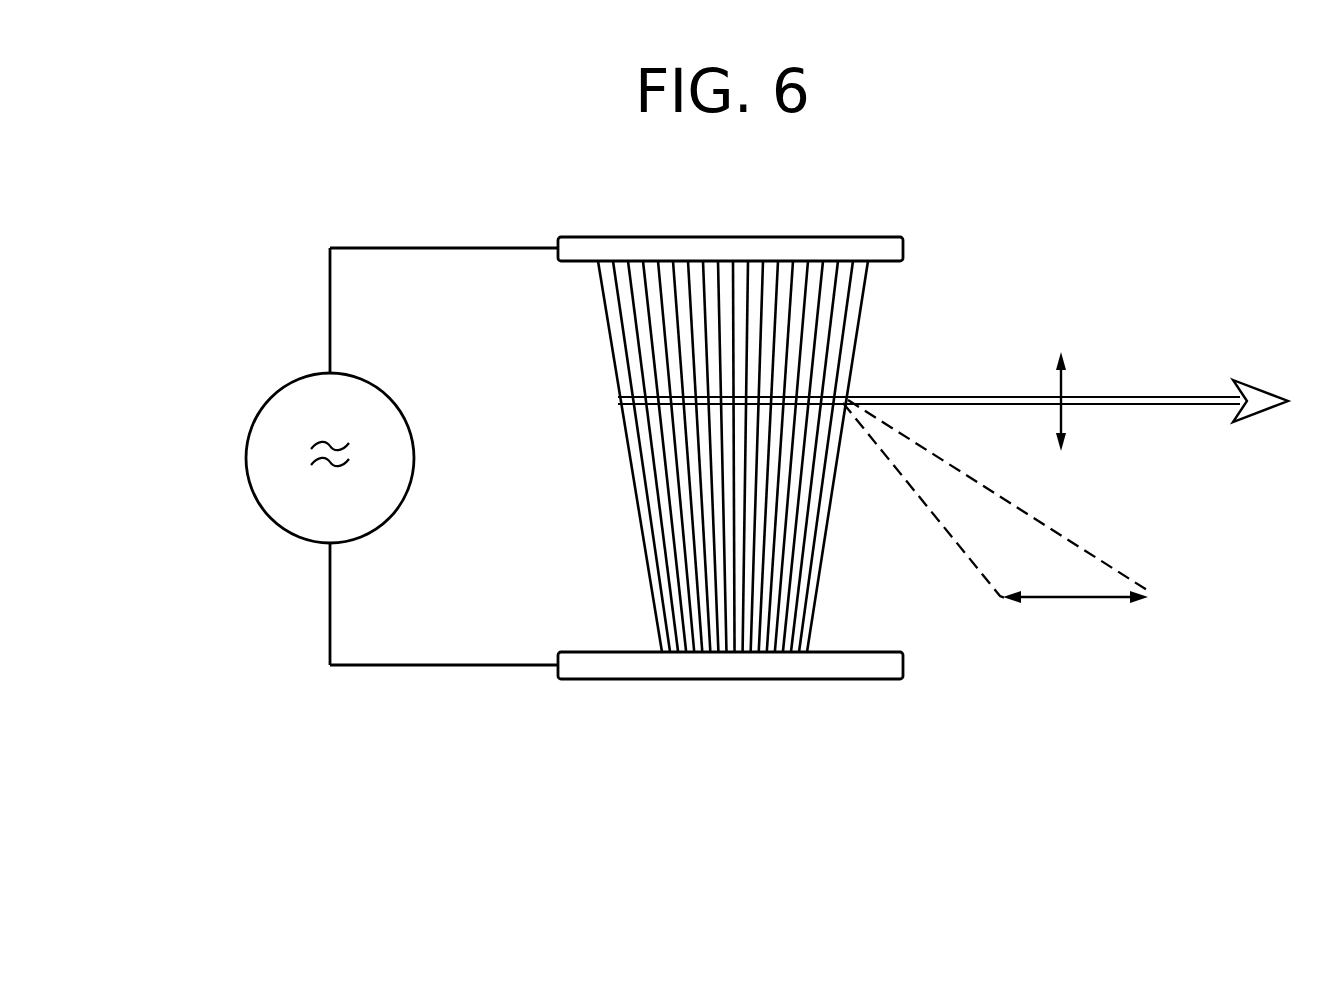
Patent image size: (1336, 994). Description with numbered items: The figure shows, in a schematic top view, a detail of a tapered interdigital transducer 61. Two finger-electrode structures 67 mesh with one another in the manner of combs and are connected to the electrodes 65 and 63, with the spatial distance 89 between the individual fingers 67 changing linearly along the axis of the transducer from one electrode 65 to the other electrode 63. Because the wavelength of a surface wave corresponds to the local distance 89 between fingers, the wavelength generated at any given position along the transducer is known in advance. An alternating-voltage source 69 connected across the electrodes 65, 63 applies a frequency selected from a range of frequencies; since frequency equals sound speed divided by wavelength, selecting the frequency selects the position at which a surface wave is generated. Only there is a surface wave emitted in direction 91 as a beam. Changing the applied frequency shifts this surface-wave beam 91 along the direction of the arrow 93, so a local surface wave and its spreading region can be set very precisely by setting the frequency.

The tapered interdigital transducer 61 is at (696, 503).
The electrode 63 is at (735, 680).
The electrode 65 is at (735, 237).
The meshing fingers 67 is at (592, 312).
The alternating-voltage source 69 is at (292, 377).
The spatial distance between fingers 89 is at (1075, 598).
The direction of surface-wave beam 91 is at (1153, 396).
The arrow indicating beam shift 93 is at (1058, 383).